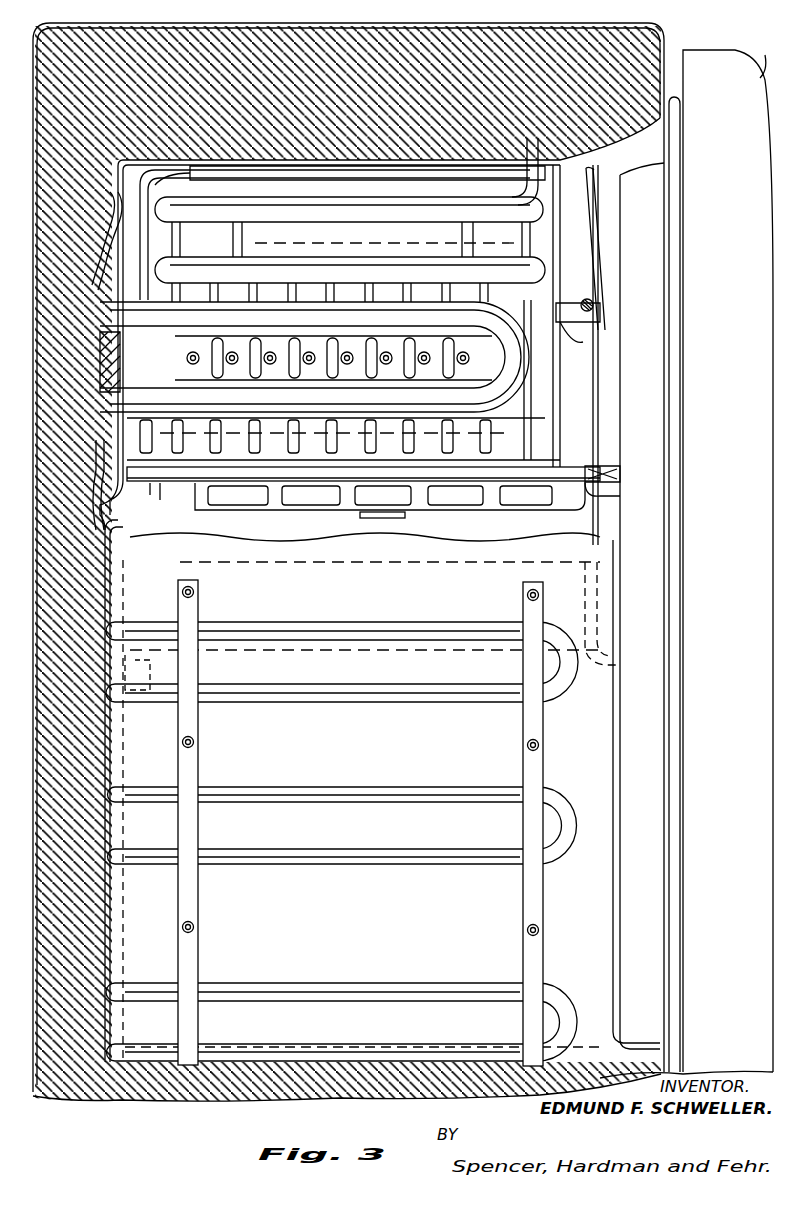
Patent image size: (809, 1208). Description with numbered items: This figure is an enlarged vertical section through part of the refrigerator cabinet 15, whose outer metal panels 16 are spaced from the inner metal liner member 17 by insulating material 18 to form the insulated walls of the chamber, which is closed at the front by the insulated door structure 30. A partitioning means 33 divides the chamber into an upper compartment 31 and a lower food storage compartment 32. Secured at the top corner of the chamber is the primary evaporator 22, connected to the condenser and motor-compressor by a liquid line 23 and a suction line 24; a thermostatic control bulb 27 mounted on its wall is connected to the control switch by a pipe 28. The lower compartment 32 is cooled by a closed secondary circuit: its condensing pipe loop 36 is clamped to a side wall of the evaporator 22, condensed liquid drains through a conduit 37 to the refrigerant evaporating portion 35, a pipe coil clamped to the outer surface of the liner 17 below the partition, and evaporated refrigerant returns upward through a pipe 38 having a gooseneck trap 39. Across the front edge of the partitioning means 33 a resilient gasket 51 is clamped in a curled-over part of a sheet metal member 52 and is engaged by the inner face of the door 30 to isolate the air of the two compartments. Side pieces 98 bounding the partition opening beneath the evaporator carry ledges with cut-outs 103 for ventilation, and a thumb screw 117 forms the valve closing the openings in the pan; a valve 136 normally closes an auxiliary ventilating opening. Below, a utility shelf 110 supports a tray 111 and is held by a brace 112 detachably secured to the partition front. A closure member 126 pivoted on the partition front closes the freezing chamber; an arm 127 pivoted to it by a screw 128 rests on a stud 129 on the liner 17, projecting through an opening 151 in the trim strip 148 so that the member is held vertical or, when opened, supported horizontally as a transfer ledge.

The refrigerator cabinet 15 is at (657, 36).
The outer metal panels 16 is at (667, 50).
The insulating material 18 is at (617, 80).
The inner metal liner member 17 is at (643, 127).
The insulated door structure 30 is at (765, 55).
The gooseneck trap 39 is at (108, 217).
The pipe 38 is at (110, 364).
The conduit 37 is at (96, 488).
The primary evaporator 22 is at (555, 410).
The liquid line 23 is at (333, 186).
The suction line 24 is at (525, 190).
The thermostatic control bulb 27 is at (383, 238).
The pipe 28 is at (513, 250).
The pipe loop 36 is at (512, 372).
The upper compartment 31 is at (548, 460).
The partitioning means 33 is at (518, 476).
The cut out 103 is at (265, 502).
The side pieces 98 is at (305, 508).
The thumb screw 117 is at (382, 520).
The valve 136 is at (166, 488).
The trim strip 148 is at (565, 210).
The closure member 126 is at (598, 232).
The opening 151 is at (622, 268).
The screw 128 is at (594, 305).
The arm 127 is at (570, 325).
The stud 129 is at (583, 342).
The resilient gasket 51 is at (606, 462).
The sheet metal member 52 is at (602, 495).
The lower food storage compartment 32 is at (555, 528).
The brace 112 is at (600, 565).
The tray 111 is at (600, 600).
The utility shelf 110 is at (600, 672).
The refrigerant evaporating portion 35 is at (255, 780).